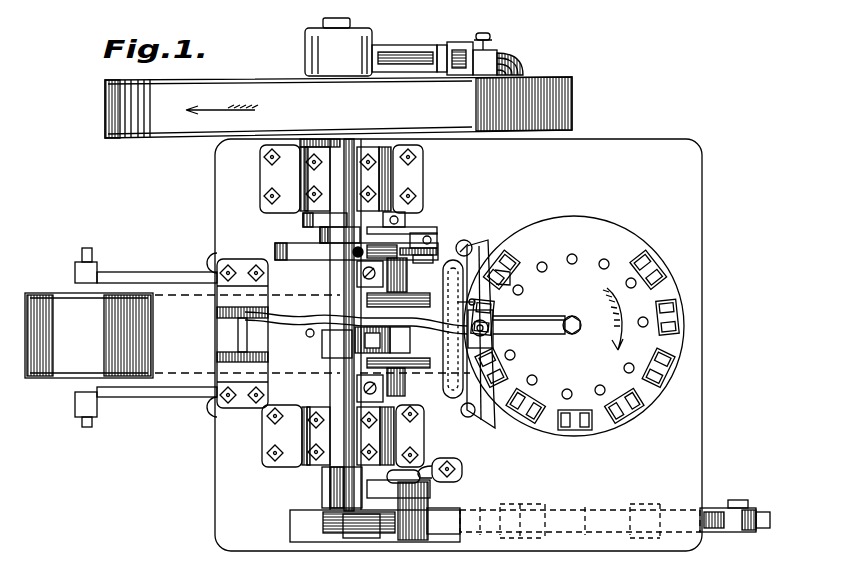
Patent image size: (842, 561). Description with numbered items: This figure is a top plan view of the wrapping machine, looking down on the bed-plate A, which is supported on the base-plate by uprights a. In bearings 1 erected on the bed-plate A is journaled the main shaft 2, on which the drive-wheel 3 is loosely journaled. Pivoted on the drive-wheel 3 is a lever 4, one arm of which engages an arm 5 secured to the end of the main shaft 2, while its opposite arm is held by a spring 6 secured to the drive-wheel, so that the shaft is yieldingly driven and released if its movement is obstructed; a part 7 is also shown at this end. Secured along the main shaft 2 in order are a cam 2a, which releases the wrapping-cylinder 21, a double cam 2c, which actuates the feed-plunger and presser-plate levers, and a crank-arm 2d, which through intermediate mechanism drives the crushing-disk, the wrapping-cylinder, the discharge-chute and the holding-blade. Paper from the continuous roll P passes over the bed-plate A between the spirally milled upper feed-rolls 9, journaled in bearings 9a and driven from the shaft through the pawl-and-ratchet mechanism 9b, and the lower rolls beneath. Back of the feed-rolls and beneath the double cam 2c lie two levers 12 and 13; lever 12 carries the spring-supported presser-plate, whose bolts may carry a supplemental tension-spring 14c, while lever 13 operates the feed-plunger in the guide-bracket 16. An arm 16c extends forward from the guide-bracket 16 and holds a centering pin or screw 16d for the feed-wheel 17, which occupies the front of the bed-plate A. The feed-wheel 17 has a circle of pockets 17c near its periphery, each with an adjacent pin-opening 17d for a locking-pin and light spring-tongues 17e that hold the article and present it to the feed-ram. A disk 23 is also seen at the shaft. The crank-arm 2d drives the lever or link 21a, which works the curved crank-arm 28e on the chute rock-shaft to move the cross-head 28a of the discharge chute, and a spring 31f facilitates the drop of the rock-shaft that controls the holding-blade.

The bearings 1 is at (350, 325).
The main shaft 2 is at (334, 389).
The cam 2a is at (298, 222).
The double cam 2c is at (322, 340).
The crank-arm 2d is at (372, 493).
The drive-wheel 3 is at (338, 107).
The lever 4 is at (483, 54).
The arm 5 is at (376, 47).
The spring 6 is at (518, 68).
The pin 7 is at (500, 55).
The upper feed-rolls 9 is at (452, 396).
The bearings 9a is at (403, 283).
The pawl-and-ratchet mechanism 9b is at (407, 226).
The lever 12 is at (232, 343).
The lever 13 is at (310, 316).
The supplemental tension-spring 14c is at (470, 418).
The guide-bracket 16 is at (495, 316).
The arm 16c is at (532, 336).
The centering pin or screw 16d is at (610, 327).
The feed-wheel 17 is at (574, 326).
The pockets 17c is at (526, 418).
The pin-opening 17d is at (622, 368).
The spring-tongues 17e is at (630, 412).
The wrapping-cylinder 21 is at (375, 534).
The lever or link 21a is at (377, 520).
The disc 23 is at (278, 250).
The cross-head 28a is at (574, 518).
The curved crank-arm 28e is at (756, 532).
The spring 31f is at (427, 499).
The bed-plate A is at (458, 345).
The continuous roll P is at (89, 335).
The uprights a is at (211, 330).